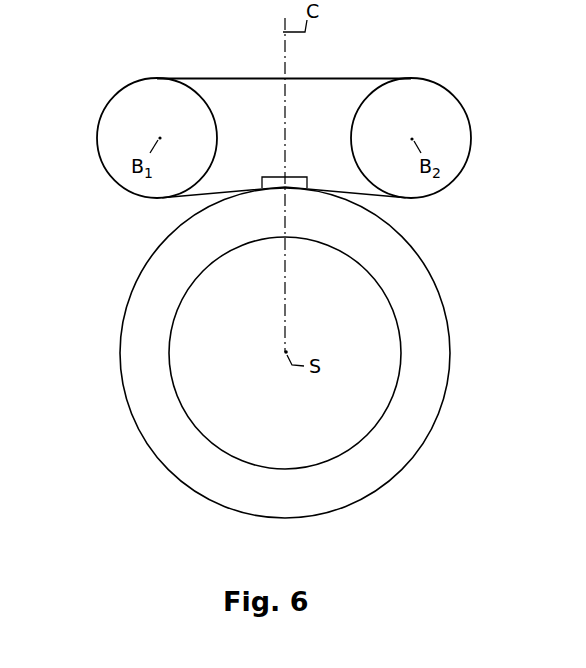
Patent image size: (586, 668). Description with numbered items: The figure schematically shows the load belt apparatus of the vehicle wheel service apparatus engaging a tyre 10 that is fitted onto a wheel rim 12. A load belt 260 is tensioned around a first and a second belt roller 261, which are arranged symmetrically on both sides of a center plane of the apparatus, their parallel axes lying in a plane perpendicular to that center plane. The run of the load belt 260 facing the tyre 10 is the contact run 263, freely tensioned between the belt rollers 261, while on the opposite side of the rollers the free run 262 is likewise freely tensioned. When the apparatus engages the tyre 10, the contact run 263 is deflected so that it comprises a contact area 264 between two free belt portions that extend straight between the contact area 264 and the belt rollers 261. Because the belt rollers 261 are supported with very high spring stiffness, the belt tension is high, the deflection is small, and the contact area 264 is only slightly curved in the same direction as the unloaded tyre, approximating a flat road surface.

The tyre 10 is at (441, 320).
The wheel rim 12 is at (393, 388).
The load belt 260 is at (291, 138).
The belt rollers 261 is at (140, 102).
The free run 262 is at (284, 64).
The contact run 263 is at (345, 212).
The contact area 264 is at (262, 177).